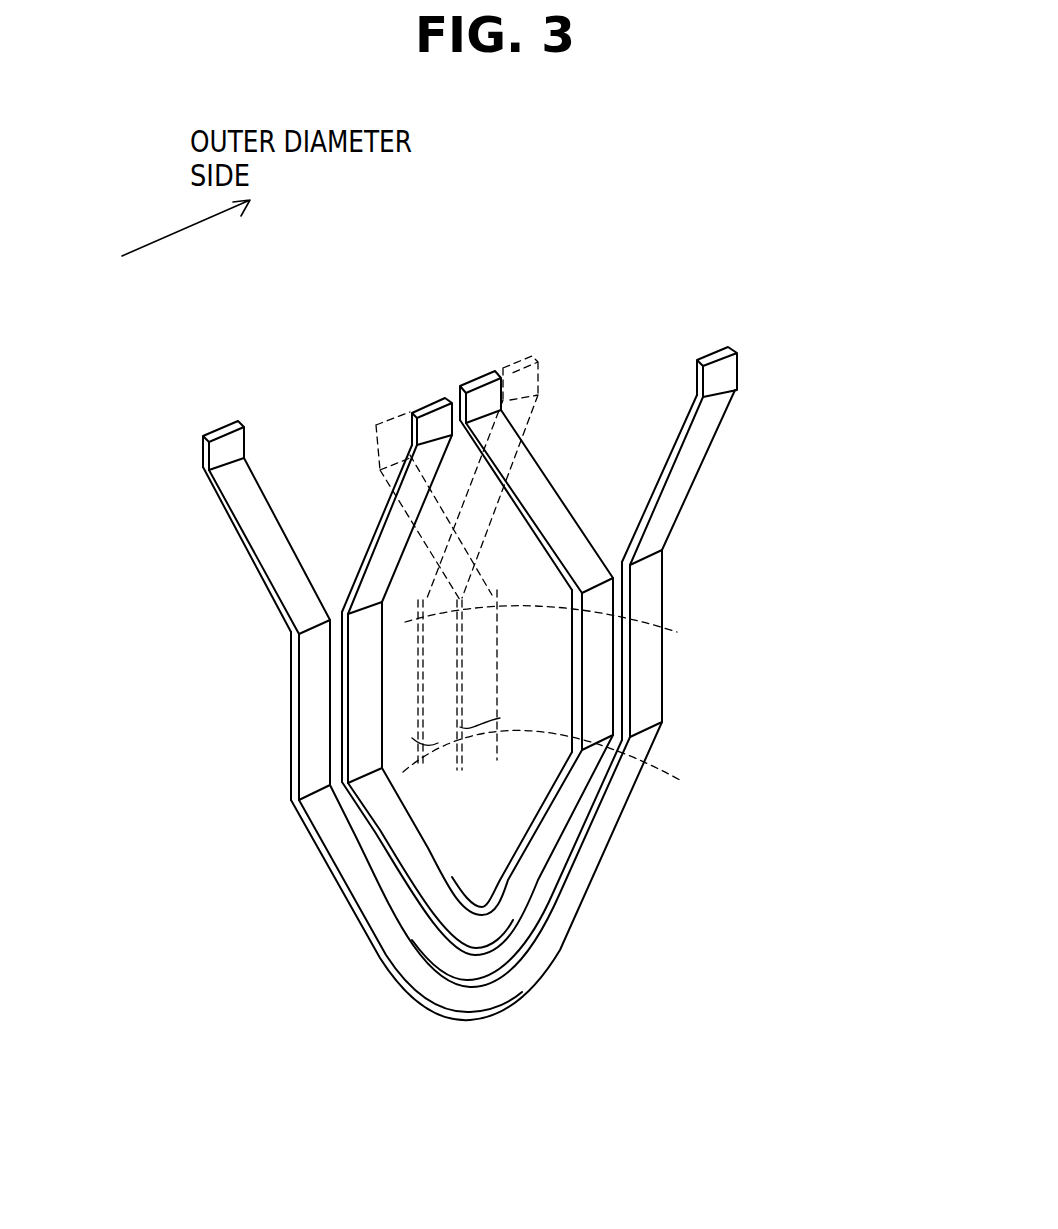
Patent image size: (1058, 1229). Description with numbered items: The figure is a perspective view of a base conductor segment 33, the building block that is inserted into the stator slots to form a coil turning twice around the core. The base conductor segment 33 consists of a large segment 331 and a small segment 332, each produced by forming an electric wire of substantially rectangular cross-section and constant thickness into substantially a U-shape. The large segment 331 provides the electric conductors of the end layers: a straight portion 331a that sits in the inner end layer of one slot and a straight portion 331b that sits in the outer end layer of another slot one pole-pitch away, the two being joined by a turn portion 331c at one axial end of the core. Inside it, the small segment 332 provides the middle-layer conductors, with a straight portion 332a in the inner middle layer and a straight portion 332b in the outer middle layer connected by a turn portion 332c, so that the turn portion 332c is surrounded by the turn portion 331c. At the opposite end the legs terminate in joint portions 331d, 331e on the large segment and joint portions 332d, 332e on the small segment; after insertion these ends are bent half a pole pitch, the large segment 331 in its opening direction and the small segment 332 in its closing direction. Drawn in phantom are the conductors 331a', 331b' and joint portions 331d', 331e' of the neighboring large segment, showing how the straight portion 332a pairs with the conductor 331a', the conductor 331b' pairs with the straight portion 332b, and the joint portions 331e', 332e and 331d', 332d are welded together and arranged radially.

The base conductor segment 33 is at (365, 1004).
The large segment 331 is at (713, 510).
The small segment 332 is at (591, 499).
The electric conductor in the inner end layer 331a is at (239, 707).
The electric conductor in the outer end layer 331b is at (736, 645).
The turn portion 331c is at (468, 1006).
The joint portion 331d is at (189, 527).
The joint portion 331e is at (753, 431).
The electric conductor in the inner middle layer 332a is at (360, 714).
The electric conductor in the outer middle layer 332b is at (600, 718).
The turn portion 332c is at (480, 940).
The joint portion 332d is at (430, 400).
The joint portion 332e is at (490, 372).
The electric conductor in the inner end layer 331a' is at (601, 701).
The electric conductor in the outer end layer 331b' is at (620, 669).
The joint portion 331d' is at (362, 453).
The joint portion 331e' is at (526, 445).